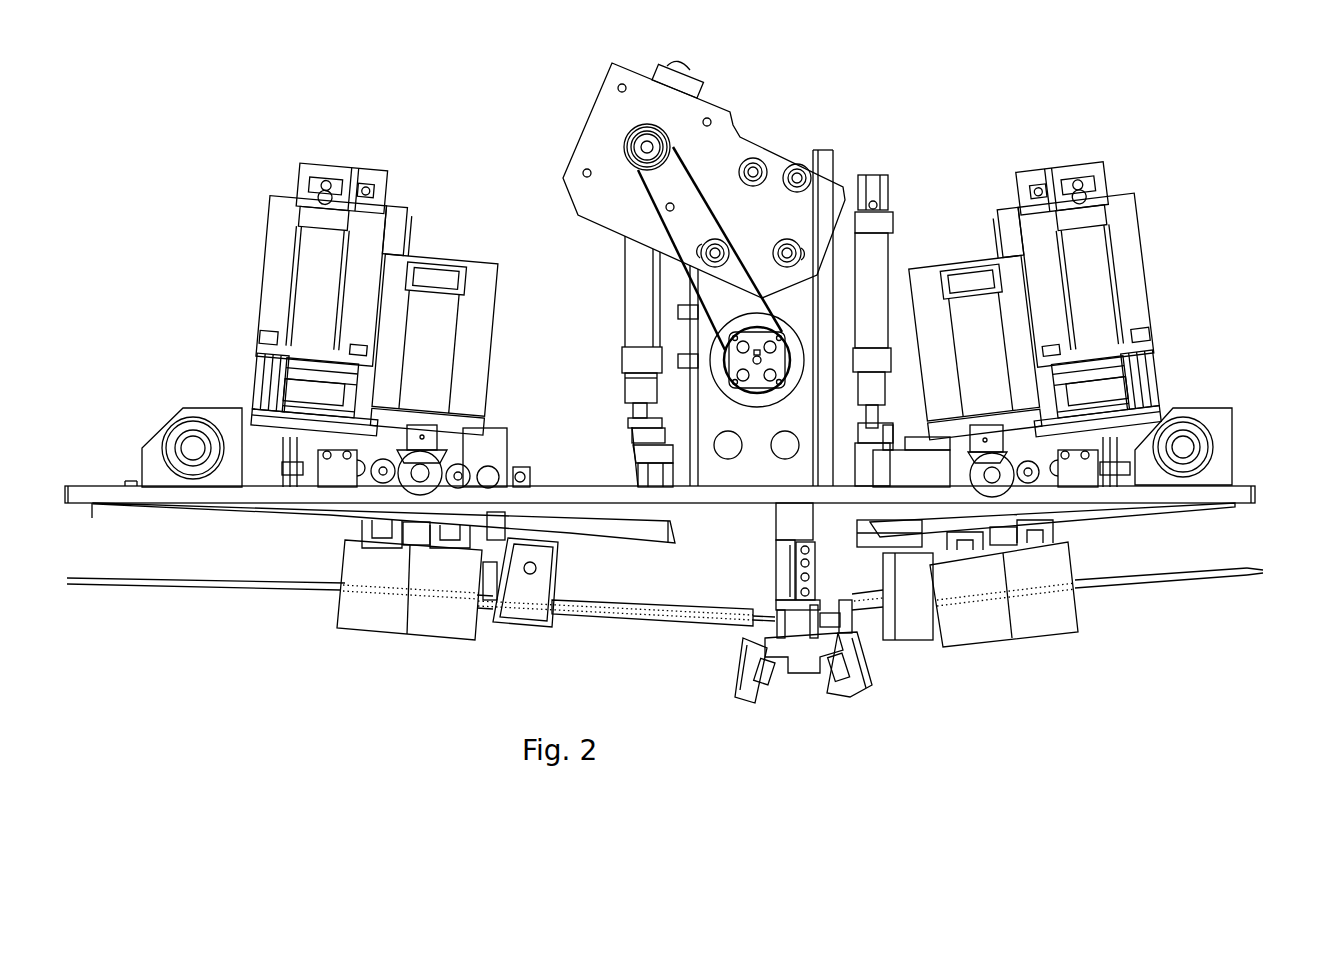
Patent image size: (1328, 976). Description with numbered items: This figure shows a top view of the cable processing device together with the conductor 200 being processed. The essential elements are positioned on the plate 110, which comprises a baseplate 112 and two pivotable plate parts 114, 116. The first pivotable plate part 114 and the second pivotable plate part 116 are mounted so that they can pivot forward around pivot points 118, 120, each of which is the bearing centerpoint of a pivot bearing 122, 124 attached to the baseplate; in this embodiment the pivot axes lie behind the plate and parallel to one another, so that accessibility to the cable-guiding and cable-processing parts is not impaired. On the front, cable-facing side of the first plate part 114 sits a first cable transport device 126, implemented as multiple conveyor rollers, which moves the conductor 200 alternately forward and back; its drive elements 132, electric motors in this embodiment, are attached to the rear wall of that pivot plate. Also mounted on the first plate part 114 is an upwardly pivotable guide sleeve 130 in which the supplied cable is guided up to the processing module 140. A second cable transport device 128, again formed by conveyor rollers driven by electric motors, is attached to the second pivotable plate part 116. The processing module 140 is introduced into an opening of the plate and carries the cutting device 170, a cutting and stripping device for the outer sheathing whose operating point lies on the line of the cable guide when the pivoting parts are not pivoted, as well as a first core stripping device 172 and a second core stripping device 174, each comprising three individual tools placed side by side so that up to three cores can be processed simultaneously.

The plate 110 is at (1262, 487).
The baseplate 112 is at (89, 524).
The first pivotable plate part 114 is at (650, 547).
The second pivotable plate part 116 is at (1087, 518).
The pivot point 118 is at (195, 447).
The pivot point 120 is at (1183, 445).
The pivot bearing 122 is at (167, 423).
The pivot bearing 124 is at (1235, 440).
The first cable transport device 126 is at (375, 633).
The second cable transport device 128 is at (1047, 637).
The guide sleeve 130 is at (610, 617).
The drive elements 132 is at (382, 160).
The processing module 140 is at (763, 140).
The cutting device 170 is at (772, 570).
The first core stripping device 172 is at (735, 673).
The second core stripping device 174 is at (873, 682).
The conductor 200 is at (665, 594).